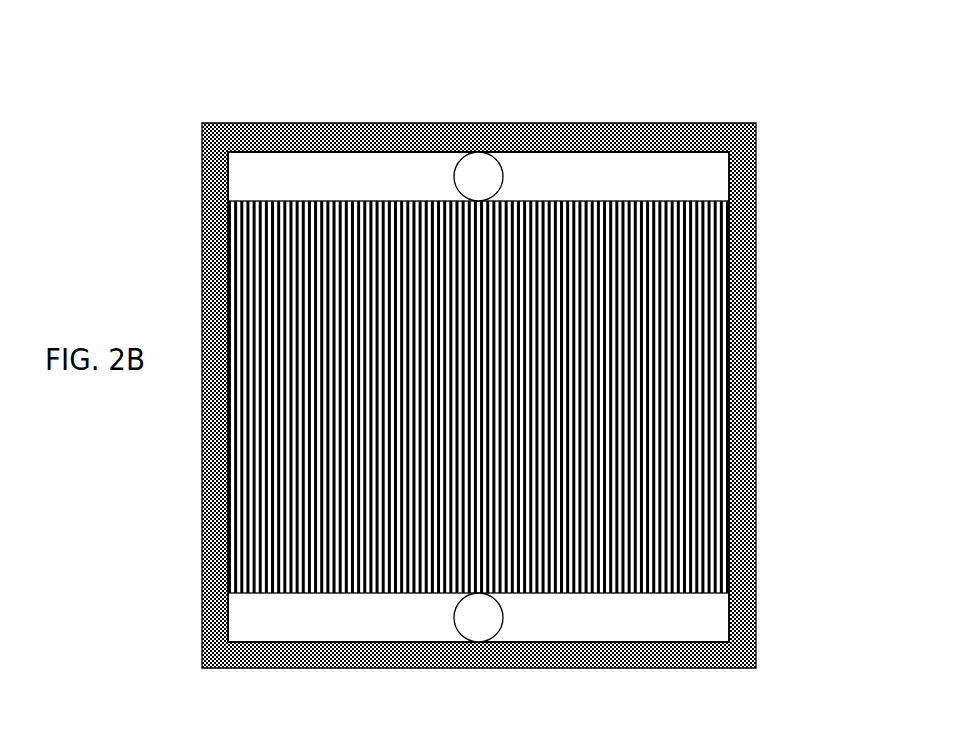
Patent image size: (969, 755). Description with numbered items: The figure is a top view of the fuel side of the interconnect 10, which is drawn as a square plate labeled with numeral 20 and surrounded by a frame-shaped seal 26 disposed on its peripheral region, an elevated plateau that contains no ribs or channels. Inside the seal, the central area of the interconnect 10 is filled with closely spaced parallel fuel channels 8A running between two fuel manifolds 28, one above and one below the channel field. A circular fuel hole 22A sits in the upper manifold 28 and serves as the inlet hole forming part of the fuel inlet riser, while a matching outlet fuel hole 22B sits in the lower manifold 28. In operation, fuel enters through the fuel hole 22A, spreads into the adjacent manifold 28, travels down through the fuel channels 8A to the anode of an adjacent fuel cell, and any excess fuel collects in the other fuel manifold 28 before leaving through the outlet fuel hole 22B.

The interconnect 10 is at (163, 248).
The cell plate 20 is at (478, 321).
The fuel hole 22A is at (478, 152).
The outlet fuel hole 22B is at (457, 692).
The frame-shaped seal 26 is at (757, 515).
The fuel manifold 28 is at (730, 173).
The fuel channels 8A is at (675, 385).